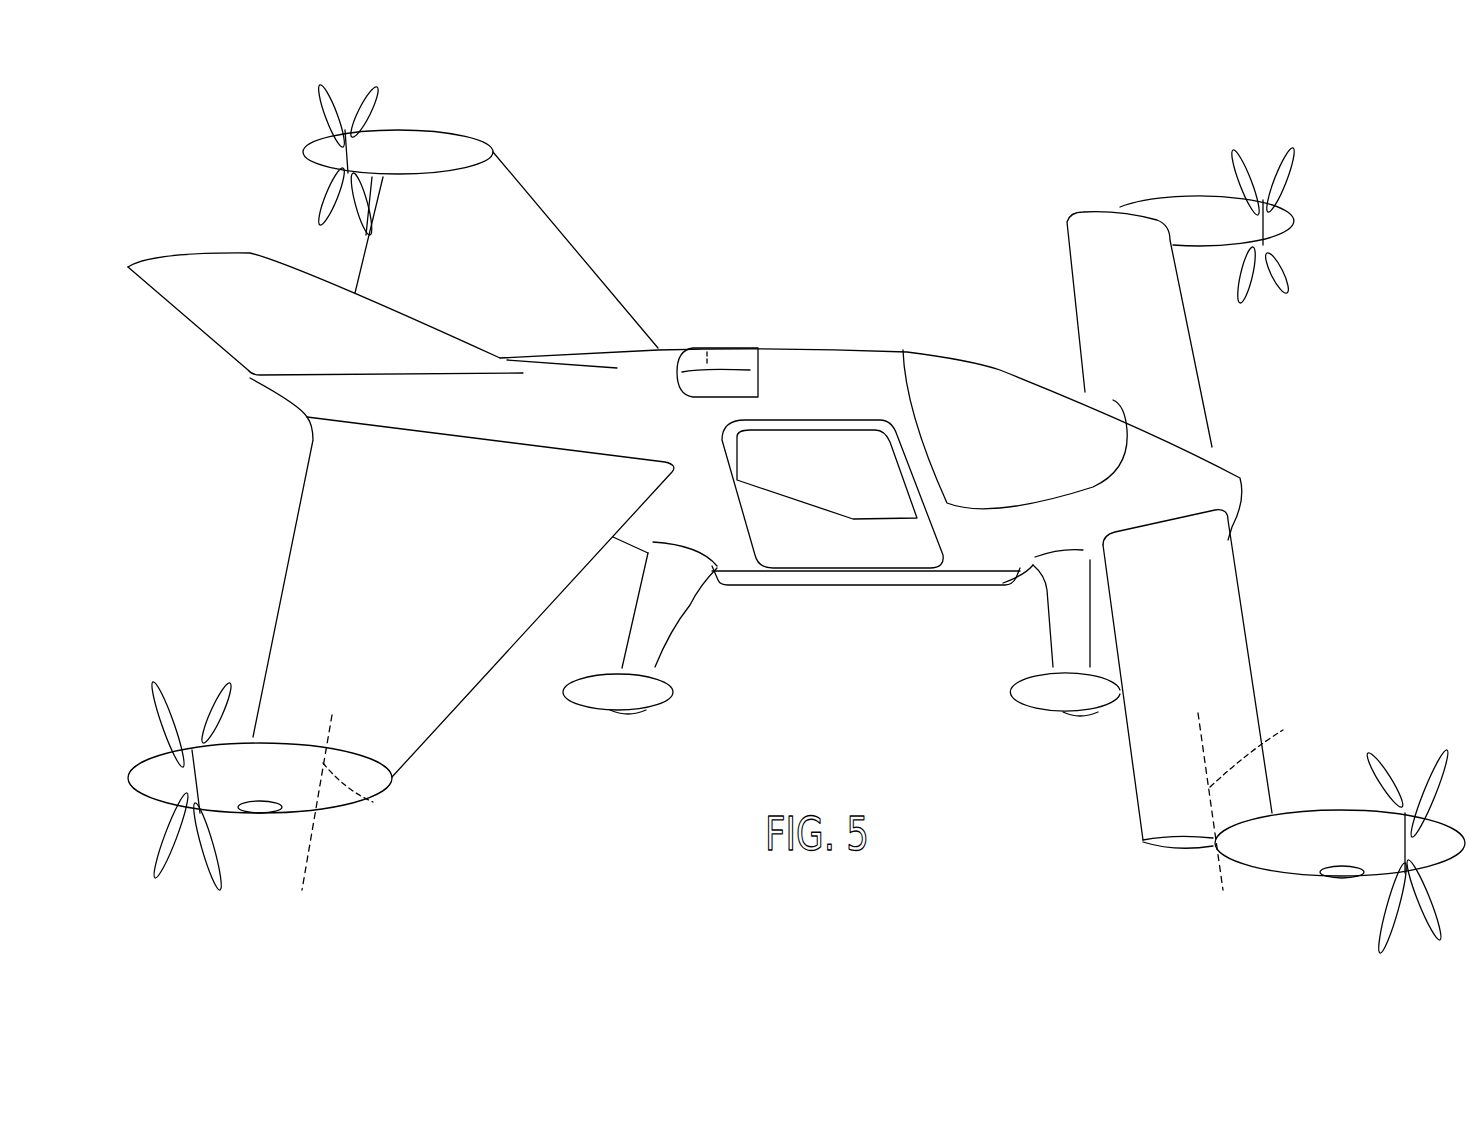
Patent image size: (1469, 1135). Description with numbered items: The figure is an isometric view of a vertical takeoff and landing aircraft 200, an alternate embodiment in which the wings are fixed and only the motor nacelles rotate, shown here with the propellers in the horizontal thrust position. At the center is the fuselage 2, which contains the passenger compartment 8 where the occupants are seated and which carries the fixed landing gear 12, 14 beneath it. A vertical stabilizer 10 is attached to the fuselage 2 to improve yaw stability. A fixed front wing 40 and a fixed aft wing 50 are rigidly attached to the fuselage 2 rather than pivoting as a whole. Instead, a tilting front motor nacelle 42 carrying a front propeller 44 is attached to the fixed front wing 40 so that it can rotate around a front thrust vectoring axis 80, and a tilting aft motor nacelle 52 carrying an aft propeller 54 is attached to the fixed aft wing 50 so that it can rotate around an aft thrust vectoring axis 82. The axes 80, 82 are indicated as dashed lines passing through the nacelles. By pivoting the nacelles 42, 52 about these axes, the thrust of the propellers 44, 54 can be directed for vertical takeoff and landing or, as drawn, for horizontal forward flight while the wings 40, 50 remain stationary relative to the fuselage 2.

The fuselage 2 is at (822, 367).
The passenger compartment 8 is at (865, 558).
The vertical stabilizer 10 is at (170, 275).
The fixed landing gear 12 is at (620, 720).
The fixed landing gear 14 is at (1068, 720).
The fixed front wing 40 is at (1090, 305).
The tilting front motor nacelle 42 is at (1190, 210).
The front propeller 44 is at (1293, 172).
The fixed aft wing 50 is at (550, 218).
The tilting aft motor nacelle 52 is at (432, 147).
The aft propeller 54 is at (338, 110).
The front thrust vectoring axis 80 is at (1254, 801).
The aft thrust vectoring axis 82 is at (351, 802).
The vertical takeoff and landing aircraft 200 is at (1218, 122).